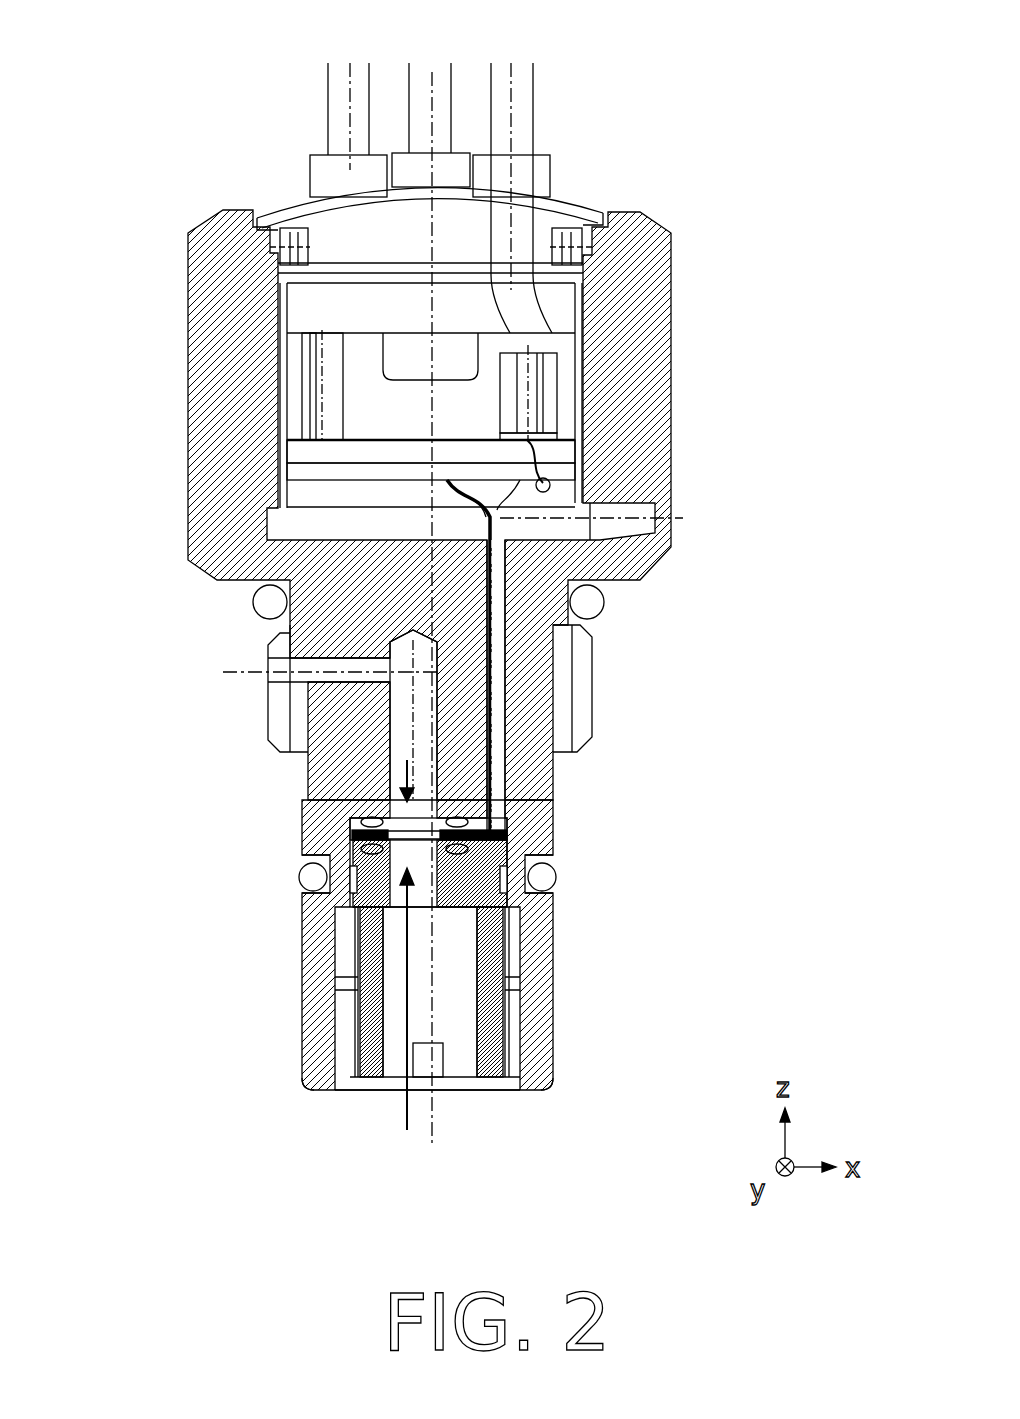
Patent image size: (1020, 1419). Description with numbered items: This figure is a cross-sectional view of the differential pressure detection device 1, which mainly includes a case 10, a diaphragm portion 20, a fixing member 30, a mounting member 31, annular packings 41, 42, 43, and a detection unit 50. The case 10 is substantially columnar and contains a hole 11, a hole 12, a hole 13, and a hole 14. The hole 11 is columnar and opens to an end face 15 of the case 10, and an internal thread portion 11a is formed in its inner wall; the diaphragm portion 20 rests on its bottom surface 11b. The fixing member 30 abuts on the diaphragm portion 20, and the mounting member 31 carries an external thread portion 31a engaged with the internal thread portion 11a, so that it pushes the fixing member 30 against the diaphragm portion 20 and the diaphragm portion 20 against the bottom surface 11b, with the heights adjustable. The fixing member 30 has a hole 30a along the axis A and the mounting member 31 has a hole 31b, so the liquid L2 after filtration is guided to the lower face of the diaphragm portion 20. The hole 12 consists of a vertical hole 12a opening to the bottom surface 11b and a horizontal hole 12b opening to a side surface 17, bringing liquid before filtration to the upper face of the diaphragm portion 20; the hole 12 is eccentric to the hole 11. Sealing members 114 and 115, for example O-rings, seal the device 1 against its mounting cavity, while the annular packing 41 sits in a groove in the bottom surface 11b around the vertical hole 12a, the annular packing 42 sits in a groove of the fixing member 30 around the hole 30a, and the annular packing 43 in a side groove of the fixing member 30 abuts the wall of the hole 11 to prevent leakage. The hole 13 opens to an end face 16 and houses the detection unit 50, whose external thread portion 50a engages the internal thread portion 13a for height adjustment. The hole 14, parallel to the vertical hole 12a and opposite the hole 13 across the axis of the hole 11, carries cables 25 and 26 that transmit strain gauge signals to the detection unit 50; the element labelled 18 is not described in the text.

The differential pressure detection device 1 is at (641, 63).
The case 10 is at (676, 389).
The hole 11 is at (343, 1083).
The internal thread portion 11a is at (520, 1035).
The bottom surface 11b is at (510, 830).
The hole 12 is at (153, 632).
The vertical hole 12a is at (400, 707).
The horizontal hole 12b is at (330, 672).
The hole 13 is at (290, 480).
The internal thread portion 13a is at (280, 320).
The hole 14 is at (497, 762).
The end face 15 is at (533, 1093).
The end face 16 is at (617, 213).
The side surface 17 is at (592, 660).
The flange side wall 18 is at (580, 697).
The diaphragm portion 20 is at (360, 833).
The cable 25 is at (490, 527).
The cable 26 is at (505, 484).
The fixing member 30 is at (477, 895).
The hole 30a is at (370, 907).
The mounting member 31 is at (490, 1000).
The external thread portion 31a is at (505, 1022).
The hole 31b is at (397, 1017).
The annular packing 41 is at (365, 823).
The annular packing 42 is at (355, 880).
The annular packing 43 is at (355, 905).
The detection unit 50 is at (372, 357).
The external thread portion 50a is at (280, 365).
The sealing member 114 is at (270, 602).
The sealing member 115 is at (547, 880).
The axis A is at (432, 72).
The liquid after filtration L2 is at (280, 742).